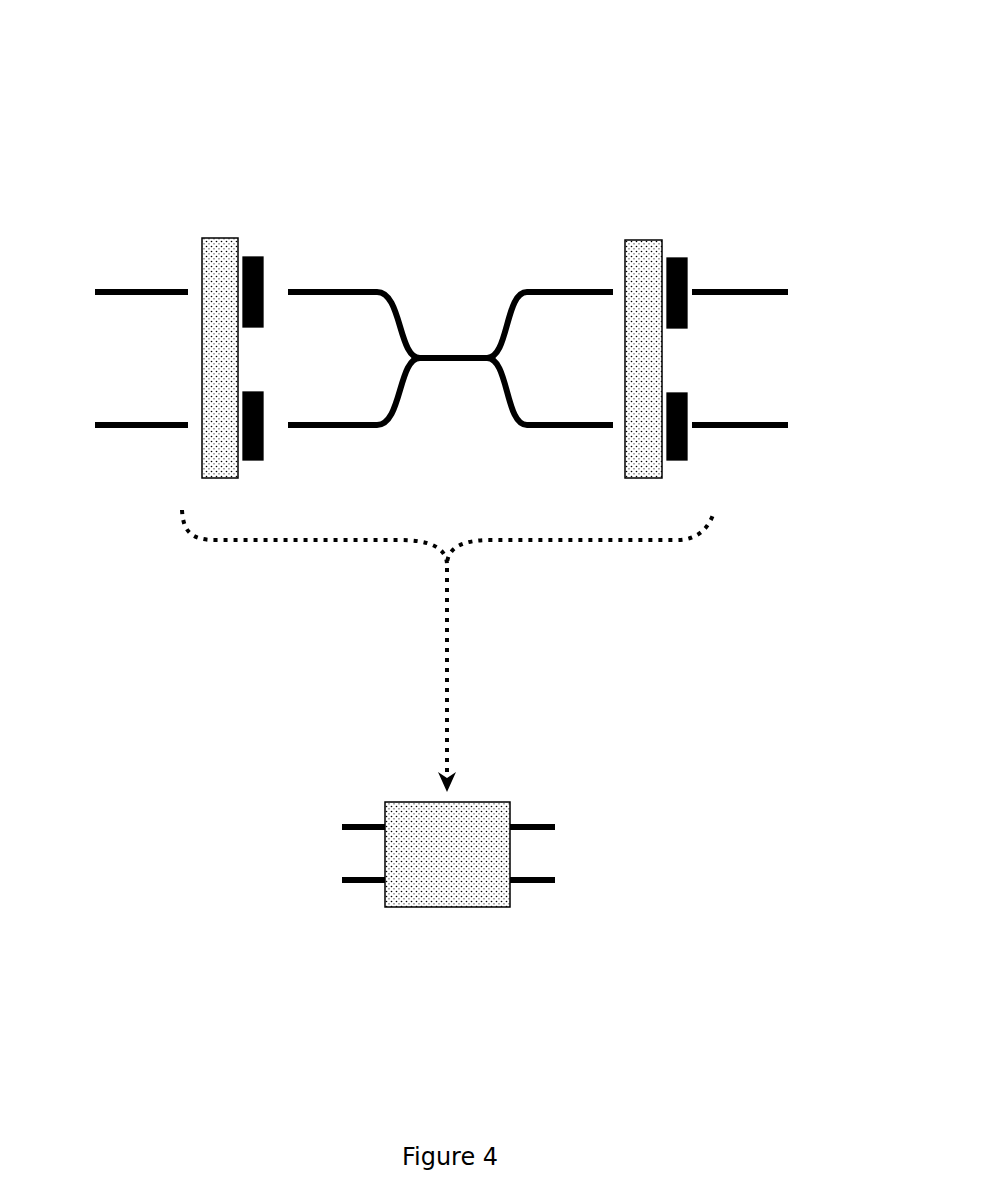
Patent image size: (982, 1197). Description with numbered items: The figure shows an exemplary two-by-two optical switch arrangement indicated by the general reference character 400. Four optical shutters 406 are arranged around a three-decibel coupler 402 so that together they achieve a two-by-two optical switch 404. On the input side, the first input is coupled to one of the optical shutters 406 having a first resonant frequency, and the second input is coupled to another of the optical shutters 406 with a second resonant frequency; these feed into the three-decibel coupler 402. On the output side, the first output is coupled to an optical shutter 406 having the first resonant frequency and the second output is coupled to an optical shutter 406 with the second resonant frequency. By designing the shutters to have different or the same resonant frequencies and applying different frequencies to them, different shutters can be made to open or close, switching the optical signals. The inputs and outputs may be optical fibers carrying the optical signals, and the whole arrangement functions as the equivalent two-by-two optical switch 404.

The 2×2 optical switch arrangement 400 is at (167, 30).
The 3 dB coupler 402 is at (471, 305).
The 2×2 optical switch 404 is at (460, 872).
The optical shutters 406 is at (665, 377).